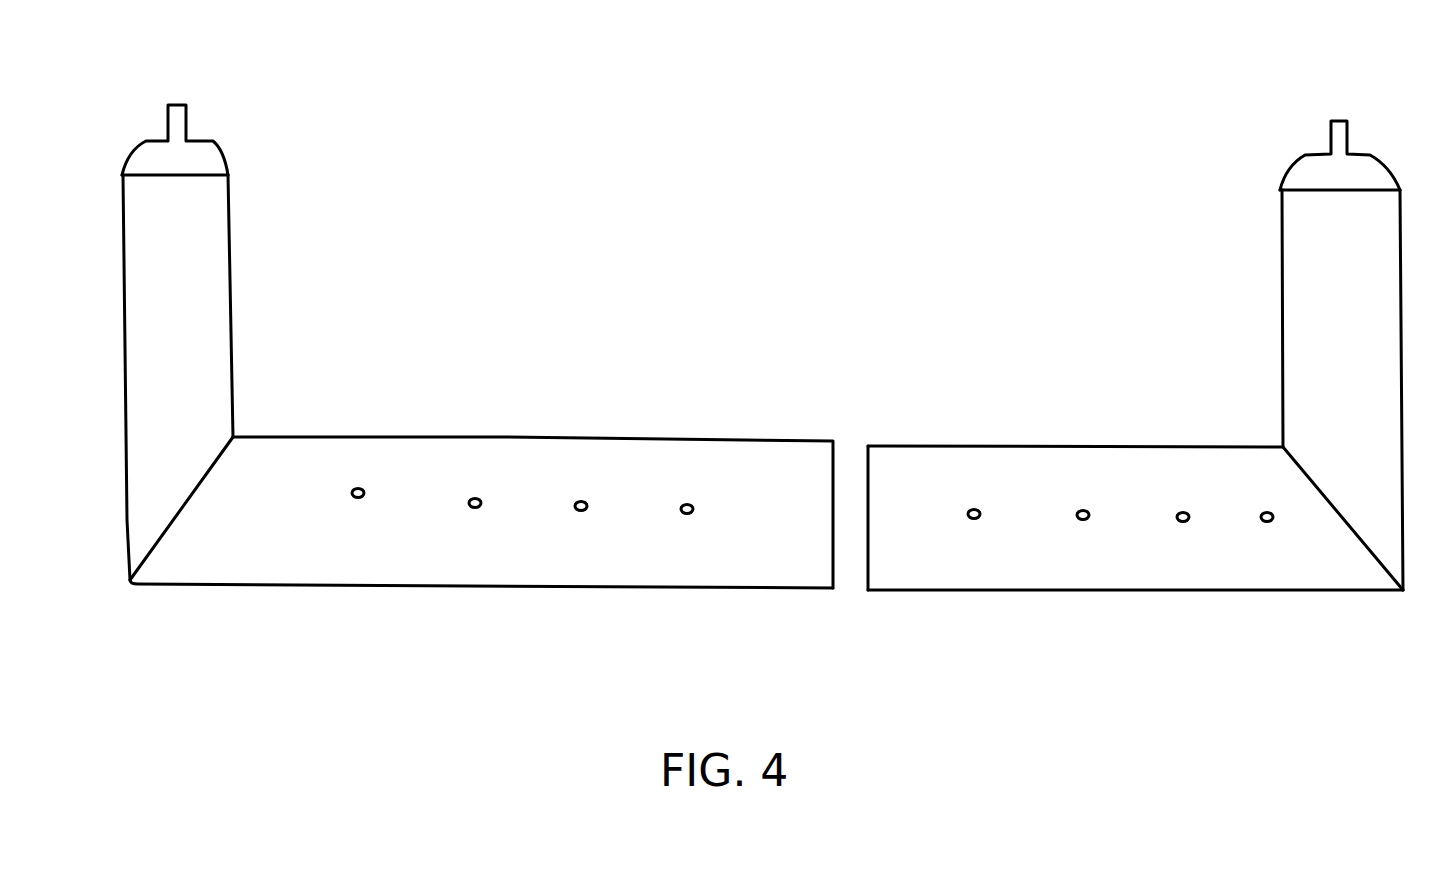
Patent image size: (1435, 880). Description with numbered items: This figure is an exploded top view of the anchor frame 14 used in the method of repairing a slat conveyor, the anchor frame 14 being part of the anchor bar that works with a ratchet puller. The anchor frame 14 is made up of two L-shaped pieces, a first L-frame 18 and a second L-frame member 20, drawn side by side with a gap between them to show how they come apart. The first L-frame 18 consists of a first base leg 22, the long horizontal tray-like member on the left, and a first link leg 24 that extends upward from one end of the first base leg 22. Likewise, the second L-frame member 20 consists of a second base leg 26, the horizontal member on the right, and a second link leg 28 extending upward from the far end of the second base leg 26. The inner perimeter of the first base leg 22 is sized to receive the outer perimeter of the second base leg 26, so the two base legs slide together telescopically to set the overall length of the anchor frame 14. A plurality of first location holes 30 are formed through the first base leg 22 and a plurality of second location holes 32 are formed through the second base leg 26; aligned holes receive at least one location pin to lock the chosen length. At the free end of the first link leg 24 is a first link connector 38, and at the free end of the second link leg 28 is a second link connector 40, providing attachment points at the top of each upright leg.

The anchor frame 14 is at (790, 128).
The first L-frame 18 is at (357, 615).
The second L-frame member 20 is at (965, 613).
The first base leg 22 is at (517, 572).
The first link leg 24 is at (215, 295).
The second base leg 26 is at (1136, 575).
The second link leg 28 is at (1300, 280).
The first location holes 30 is at (477, 497).
The second location holes 32 is at (976, 510).
The first link connector 38 is at (218, 153).
The second link connector 40 is at (1300, 165).